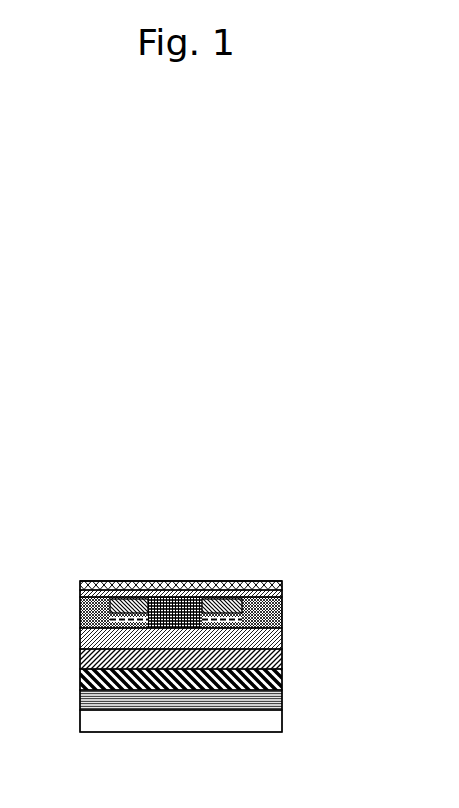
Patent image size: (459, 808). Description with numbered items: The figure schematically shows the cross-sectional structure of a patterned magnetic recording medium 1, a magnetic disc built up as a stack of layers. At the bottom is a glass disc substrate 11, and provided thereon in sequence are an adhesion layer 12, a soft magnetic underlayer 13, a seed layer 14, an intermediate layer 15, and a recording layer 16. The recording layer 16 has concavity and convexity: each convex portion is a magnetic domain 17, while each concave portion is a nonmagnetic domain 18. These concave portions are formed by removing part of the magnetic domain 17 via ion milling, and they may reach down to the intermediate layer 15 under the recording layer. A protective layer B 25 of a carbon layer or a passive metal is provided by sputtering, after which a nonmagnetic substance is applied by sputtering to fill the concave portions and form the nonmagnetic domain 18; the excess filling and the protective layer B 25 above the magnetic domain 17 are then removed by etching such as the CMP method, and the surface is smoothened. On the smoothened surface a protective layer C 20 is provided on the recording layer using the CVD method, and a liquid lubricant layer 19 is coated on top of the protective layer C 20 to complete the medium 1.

The magnetic recording medium 1 is at (72, 600).
The substrate 11 is at (283, 725).
The adhesion layer 12 is at (283, 702).
The soft magnetic underlayer 13 is at (283, 682).
The seed layer 14 is at (283, 660).
The intermediate layer 15 is at (283, 638).
The recording layer 16 is at (283, 630).
The magnetic domain 17 is at (283, 587).
The nonmagnetic domain 18 is at (167, 607).
The lubricant layer 19 is at (222, 613).
The protective layer C 20 is at (92, 581).
The protective layer B 25 is at (268, 597).